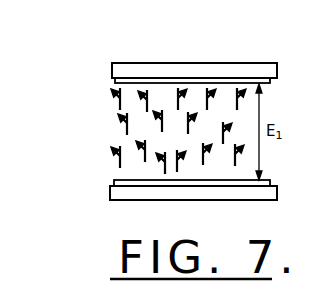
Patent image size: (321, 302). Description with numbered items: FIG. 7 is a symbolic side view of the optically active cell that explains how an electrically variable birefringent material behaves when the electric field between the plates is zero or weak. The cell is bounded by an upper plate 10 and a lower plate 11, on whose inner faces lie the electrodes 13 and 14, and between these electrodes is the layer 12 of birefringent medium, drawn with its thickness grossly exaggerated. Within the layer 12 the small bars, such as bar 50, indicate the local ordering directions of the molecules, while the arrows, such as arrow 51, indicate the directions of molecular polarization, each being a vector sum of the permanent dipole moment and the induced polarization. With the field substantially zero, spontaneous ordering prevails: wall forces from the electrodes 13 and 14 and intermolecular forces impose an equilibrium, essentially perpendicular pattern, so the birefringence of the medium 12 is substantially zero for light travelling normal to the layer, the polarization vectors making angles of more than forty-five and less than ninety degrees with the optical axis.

The upper plate 10 is at (227, 63).
The lower plate 11 is at (110, 193).
The layer 12 is at (131, 116).
The electrode 13 is at (270, 82).
The electrode 14 is at (270, 182).
The bar 50 is at (86, 89).
The arrow 51 is at (110, 92).